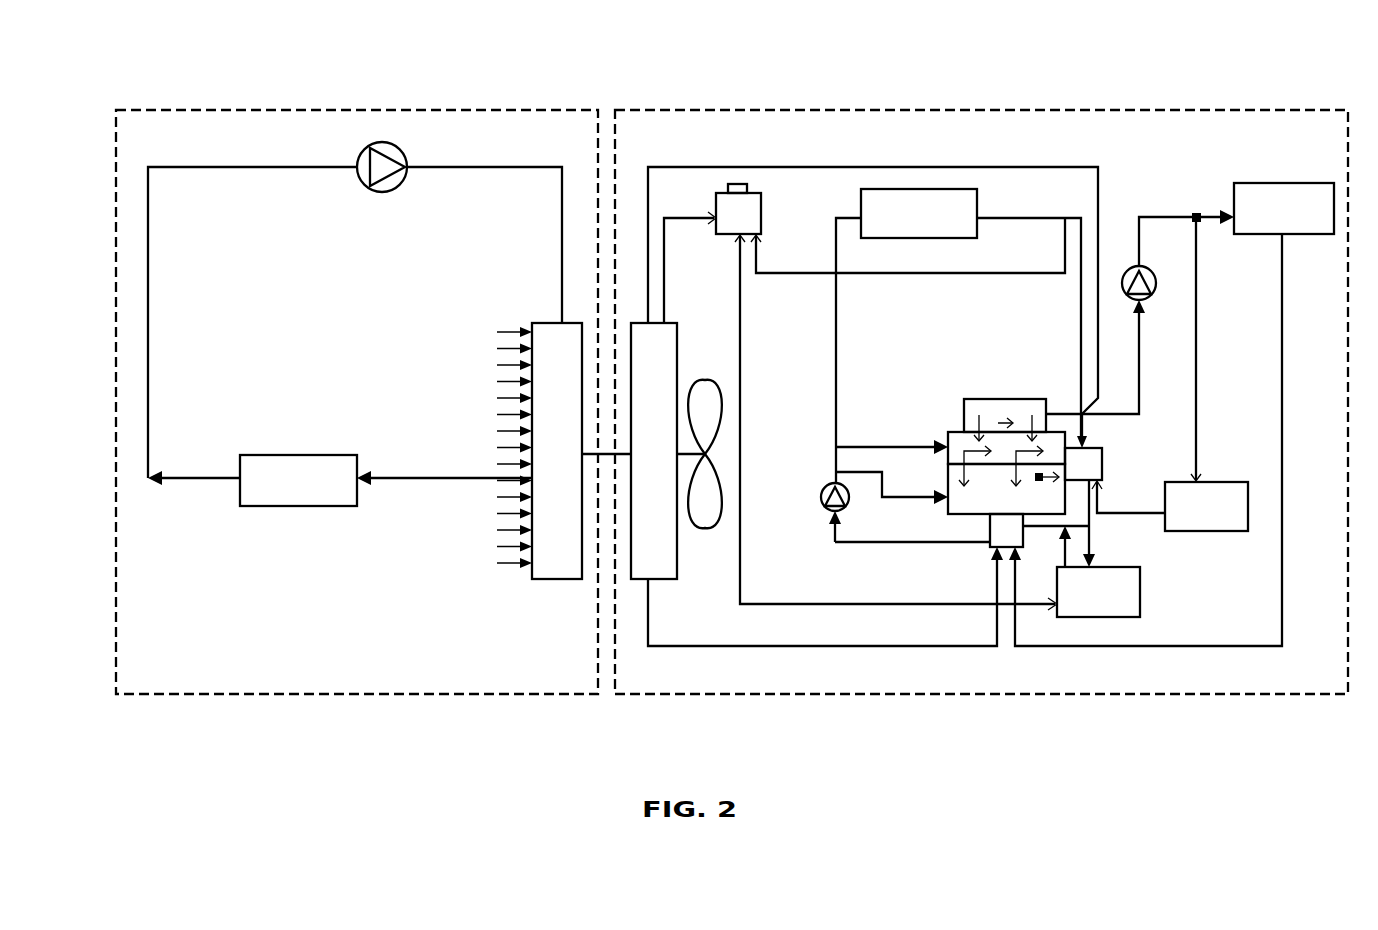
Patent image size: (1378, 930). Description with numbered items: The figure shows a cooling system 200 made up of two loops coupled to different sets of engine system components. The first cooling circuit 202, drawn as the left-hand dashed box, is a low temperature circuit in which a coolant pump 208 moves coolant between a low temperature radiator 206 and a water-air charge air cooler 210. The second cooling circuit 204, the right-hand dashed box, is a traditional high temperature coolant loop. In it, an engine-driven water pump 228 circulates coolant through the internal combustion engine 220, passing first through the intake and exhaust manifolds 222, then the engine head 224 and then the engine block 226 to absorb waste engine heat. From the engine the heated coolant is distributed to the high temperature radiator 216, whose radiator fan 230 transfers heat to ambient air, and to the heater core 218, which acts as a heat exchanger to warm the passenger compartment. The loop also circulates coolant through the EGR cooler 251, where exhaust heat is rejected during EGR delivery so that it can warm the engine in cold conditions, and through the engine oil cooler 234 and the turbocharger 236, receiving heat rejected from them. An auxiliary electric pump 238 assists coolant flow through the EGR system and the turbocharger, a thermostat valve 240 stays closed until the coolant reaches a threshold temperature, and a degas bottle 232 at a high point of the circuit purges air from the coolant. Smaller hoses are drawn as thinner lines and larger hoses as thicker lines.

The cooling system 200 is at (1296, 41).
The first cooling circuit 202 is at (433, 110).
The second cooling circuit 204 is at (897, 110).
The low temperature radiator 206 is at (539, 451).
The coolant pump 208 is at (404, 150).
The water-air charge air cooler 210 is at (298, 480).
The high temperature radiator 216 is at (654, 451).
The heater core 218 is at (1284, 208).
The internal combustion engine 220 is at (997, 388).
The intake and exhaust manifolds 222 is at (963, 422).
The engine head 224 is at (947, 439).
The engine block 226 is at (947, 489).
The engine-driven water pump 228 is at (823, 490).
The radiator fan 230 is at (701, 380).
The degas bottle 232 is at (761, 208).
The engine oil cooler 234 is at (1098, 592).
The turbocharger 236 is at (1206, 506).
The auxiliary electric pump 238 is at (1155, 257).
The thermostat valve 240 is at (990, 547).
The EGR cooler 251 is at (919, 213).